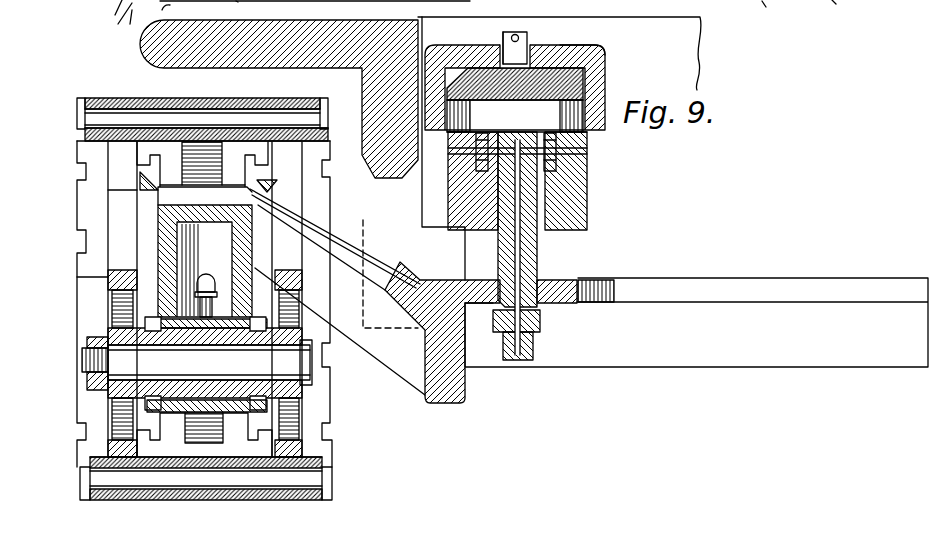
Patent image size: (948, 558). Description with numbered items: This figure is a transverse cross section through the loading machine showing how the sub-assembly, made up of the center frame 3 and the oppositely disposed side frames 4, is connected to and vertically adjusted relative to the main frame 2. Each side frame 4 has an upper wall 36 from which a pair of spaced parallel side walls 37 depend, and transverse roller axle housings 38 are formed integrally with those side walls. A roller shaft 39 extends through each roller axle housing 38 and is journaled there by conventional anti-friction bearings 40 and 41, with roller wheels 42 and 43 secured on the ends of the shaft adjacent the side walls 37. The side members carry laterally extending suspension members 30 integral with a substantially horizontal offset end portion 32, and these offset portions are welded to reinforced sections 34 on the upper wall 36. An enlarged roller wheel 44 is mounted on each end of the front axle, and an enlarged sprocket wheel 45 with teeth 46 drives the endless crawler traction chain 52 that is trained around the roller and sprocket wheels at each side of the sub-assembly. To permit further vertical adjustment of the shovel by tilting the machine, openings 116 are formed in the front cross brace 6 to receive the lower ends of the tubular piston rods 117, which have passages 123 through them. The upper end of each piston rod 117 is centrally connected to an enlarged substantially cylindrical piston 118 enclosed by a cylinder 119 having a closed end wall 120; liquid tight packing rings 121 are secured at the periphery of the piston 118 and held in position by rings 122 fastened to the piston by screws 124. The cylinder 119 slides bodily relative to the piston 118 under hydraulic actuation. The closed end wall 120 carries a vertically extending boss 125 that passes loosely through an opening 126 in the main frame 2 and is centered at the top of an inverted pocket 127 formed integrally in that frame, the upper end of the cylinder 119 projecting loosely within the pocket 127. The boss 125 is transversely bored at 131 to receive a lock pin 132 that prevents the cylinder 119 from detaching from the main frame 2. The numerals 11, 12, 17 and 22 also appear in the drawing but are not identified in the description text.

The main frame 2 is at (420, 38).
The center frame 3 is at (586, 282).
The side frame 4 is at (173, 200).
The front cross brace 6 is at (778, 282).
The column 11 is at (107, 10).
The slide 12 is at (233, 11).
The guide 17 is at (174, 11).
The lever 22 is at (844, 8).
The suspension member 30 is at (370, 258).
The offset end portion 32 is at (240, 190).
The reinforced section 34 is at (252, 196).
The upper wall 36 is at (157, 215).
The side wall 37 is at (178, 251).
The roller axle housing 38 is at (166, 415).
The roller shaft 39 is at (312, 365).
The anti-friction bearing 40 is at (167, 417).
The anti-friction bearing 41 is at (233, 427).
The roller wheel 42 is at (77, 277).
The roller wheel 43 is at (290, 305).
The enlarged roller wheel 44 is at (776, 11).
The sprocket wheel 45 is at (137, 17).
The teeth 46 is at (117, 22).
The endless crawler traction chain 52 is at (128, 98).
The opening 116 is at (541, 298).
The tubular piston rod 117 is at (545, 249).
The piston 118 is at (588, 191).
The cylinder 119 is at (588, 213).
The closed end wall 120 is at (600, 72).
The packing ring 121 is at (588, 152).
The ring 122 is at (517, 116).
The passage 123 is at (521, 265).
The screw 124 is at (516, 144).
The boss 125 is at (521, 32).
The opening 126 is at (500, 68).
The inverted pocket 127 is at (600, 54).
The transverse bore 131 is at (527, 32).
The lock pin 132 is at (528, 36).